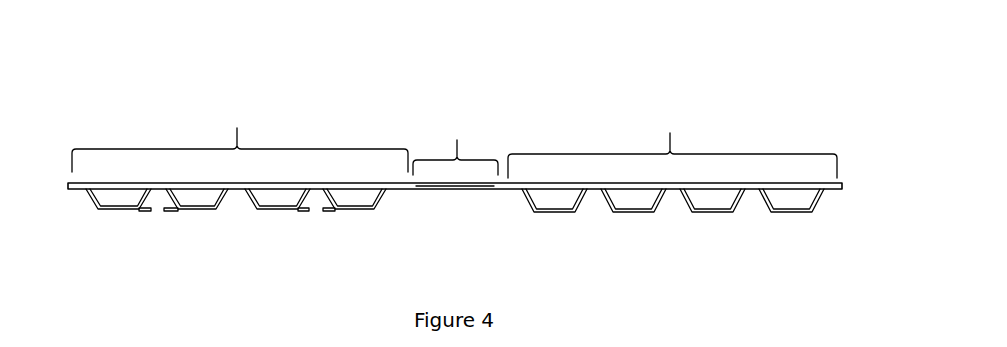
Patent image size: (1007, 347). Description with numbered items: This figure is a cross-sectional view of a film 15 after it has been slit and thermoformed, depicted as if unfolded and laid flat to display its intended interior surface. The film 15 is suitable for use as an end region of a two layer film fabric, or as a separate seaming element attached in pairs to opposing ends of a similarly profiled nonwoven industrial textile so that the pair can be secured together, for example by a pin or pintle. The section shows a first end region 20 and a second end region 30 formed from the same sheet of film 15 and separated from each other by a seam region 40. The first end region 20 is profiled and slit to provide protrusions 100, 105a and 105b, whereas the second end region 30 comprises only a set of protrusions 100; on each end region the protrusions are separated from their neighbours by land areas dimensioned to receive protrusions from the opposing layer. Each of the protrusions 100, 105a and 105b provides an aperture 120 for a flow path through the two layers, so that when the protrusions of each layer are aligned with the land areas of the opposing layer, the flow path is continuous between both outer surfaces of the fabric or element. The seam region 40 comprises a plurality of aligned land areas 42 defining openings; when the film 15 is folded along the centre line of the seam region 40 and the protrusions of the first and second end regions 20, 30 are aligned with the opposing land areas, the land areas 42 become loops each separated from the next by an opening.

The film 15 is at (450, 158).
The first end region 20 is at (240, 137).
The second end region 30 is at (672, 145).
The seam region 40 is at (455, 190).
The land areas 42 is at (451, 190).
The protrusions 100 is at (441, 228).
The protrusions 105a is at (168, 211).
The protrusions 105b is at (118, 211).
The aperture 120 is at (102, 198).